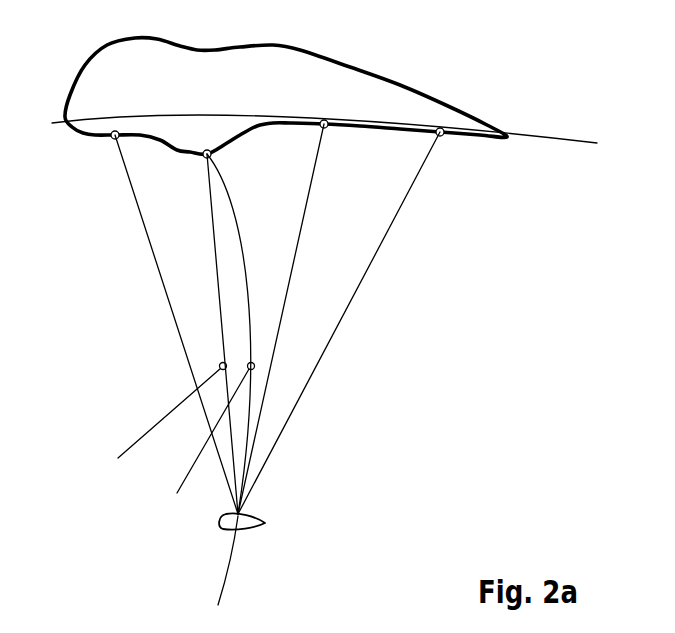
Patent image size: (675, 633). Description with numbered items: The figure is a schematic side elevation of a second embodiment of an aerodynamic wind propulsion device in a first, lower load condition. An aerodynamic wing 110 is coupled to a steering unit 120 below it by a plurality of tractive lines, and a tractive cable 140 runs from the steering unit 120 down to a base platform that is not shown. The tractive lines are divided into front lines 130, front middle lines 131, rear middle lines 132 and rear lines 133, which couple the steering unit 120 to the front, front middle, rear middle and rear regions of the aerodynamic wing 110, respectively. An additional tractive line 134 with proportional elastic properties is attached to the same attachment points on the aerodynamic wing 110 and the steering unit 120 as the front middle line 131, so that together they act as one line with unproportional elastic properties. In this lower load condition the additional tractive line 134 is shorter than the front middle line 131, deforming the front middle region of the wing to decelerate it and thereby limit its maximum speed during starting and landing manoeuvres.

The aerodynamic wing 110 is at (300, 68).
The steering unit 120 is at (247, 515).
The front lines 130 is at (140, 213).
The front middle lines 131 is at (247, 260).
The rear middle lines 132 is at (295, 267).
The rear lines 133 is at (327, 350).
The additional tractive line 134 is at (222, 332).
The tractive cable 140 is at (228, 572).